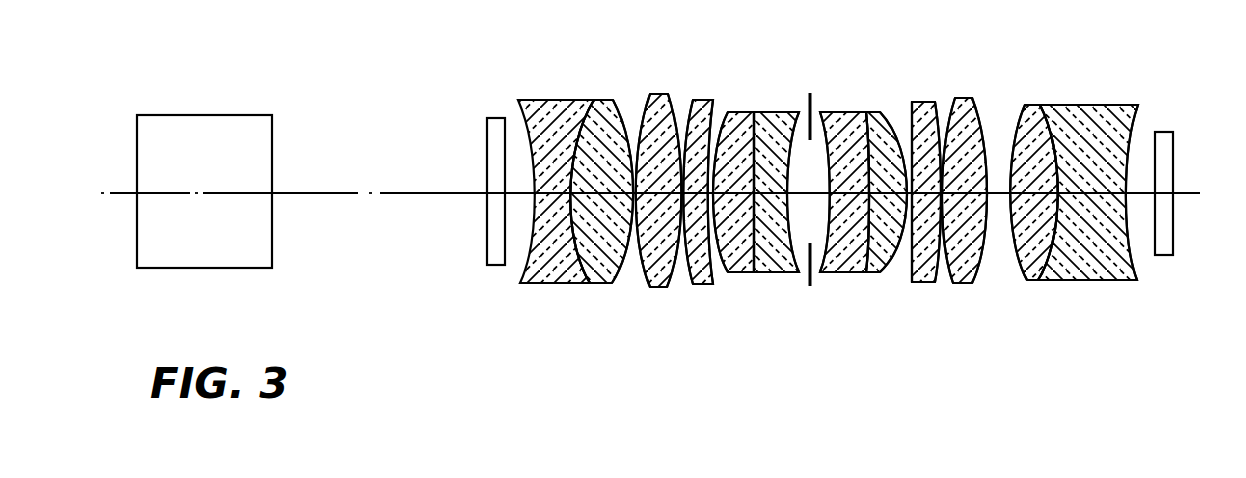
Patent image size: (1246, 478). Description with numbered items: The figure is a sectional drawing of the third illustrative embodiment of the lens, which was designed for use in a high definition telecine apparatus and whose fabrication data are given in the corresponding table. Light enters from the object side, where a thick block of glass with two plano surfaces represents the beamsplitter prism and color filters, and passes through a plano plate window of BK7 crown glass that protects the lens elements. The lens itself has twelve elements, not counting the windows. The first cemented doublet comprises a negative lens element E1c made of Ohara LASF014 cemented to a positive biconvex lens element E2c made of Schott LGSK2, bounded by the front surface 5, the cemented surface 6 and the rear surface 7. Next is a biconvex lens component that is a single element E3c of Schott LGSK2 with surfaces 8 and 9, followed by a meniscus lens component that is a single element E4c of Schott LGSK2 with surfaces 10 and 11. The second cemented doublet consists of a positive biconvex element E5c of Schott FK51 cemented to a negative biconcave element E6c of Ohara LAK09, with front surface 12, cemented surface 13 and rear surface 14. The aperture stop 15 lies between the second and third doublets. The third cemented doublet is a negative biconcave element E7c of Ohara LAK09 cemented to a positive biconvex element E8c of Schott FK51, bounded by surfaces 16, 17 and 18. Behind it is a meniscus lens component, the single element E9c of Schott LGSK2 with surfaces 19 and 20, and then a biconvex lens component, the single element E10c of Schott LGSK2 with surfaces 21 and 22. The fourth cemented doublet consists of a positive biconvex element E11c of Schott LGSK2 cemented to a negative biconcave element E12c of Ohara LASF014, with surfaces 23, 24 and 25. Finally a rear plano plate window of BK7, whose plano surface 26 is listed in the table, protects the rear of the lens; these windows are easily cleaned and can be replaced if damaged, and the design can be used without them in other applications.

The negative lens element E1c is at (532, 100).
The positive biconvex lens element E2c is at (612, 100).
The biconvex lens component E3c is at (657, 94).
The meniscus lens component E4c is at (708, 100).
The positive biconvex lens element E5c is at (743, 112).
The negative biconcave lens element E6c is at (782, 112).
The negative biconcave lens element E7c is at (840, 112).
The positive biconvex lens element E8c is at (880, 112).
The meniscus lens component E9c is at (920, 102).
The biconvex lens component E10c is at (967, 98).
The positive biconvex lens element E11c is at (1032, 105).
The negative biconcave lens element E12c is at (1097, 105).
The lens surface 5 is at (506, 266).
The lens surface 6 is at (578, 272).
The lens surface 7 is at (600, 272).
The lens surface 8 is at (644, 277).
The lens surface 9 is at (674, 288).
The lens surface 10 is at (692, 272).
The lens surface 11 is at (721, 274).
The lens surface 12 is at (730, 274).
The lens surface 13 is at (755, 272).
The lens surface 14 is at (766, 262).
The aperture stop 15 is at (802, 288).
The lens surface 16 is at (831, 273).
The lens surface 17 is at (865, 273).
The lens surface 18 is at (895, 273).
The lens surface 19 is at (906, 264).
The lens surface 20 is at (938, 270).
The lens surface 21 is at (950, 264).
The lens surface 22 is at (982, 258).
The lens surface 23 is at (1012, 262).
The lens surface 24 is at (1070, 264).
The lens surface 25 is at (1132, 258).
The plano plate window surface 26 is at (1167, 256).